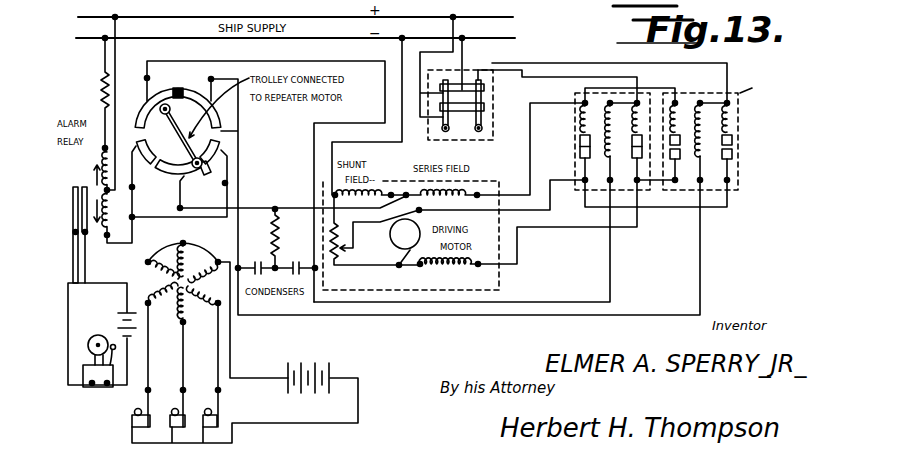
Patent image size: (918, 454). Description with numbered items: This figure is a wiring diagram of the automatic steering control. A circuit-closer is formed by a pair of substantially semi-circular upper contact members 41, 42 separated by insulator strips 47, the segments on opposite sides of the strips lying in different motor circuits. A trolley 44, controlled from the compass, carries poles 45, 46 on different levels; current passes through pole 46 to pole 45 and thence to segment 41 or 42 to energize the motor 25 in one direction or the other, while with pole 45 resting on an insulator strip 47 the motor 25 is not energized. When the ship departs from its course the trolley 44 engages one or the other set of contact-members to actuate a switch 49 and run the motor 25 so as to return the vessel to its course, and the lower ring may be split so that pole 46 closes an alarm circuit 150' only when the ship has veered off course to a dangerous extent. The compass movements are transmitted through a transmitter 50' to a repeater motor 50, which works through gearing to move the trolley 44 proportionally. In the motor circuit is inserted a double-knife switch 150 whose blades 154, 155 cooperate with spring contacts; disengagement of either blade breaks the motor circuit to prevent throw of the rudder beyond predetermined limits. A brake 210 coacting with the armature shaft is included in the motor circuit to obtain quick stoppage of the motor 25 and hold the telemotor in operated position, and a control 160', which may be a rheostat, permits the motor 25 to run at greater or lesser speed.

The upper contact member 41 is at (138, 115).
The upper contact member 42 is at (198, 172).
The trolley 44 is at (178, 157).
The pole 45 is at (181, 136).
The pole 46 is at (292, 193).
The insulator strip 47 is at (179, 84).
The switch 49 is at (689, 142).
The repeater motor 50 is at (212, 301).
The transmitter 50' is at (245, 373).
The motor 25 is at (462, 224).
The switch 150 is at (573, 78).
The alarm circuit 150' is at (77, 228).
The blade 154 is at (484, 95).
The blade 155 is at (449, 131).
The control 160' is at (375, 242).
The brake 210 is at (528, 235).